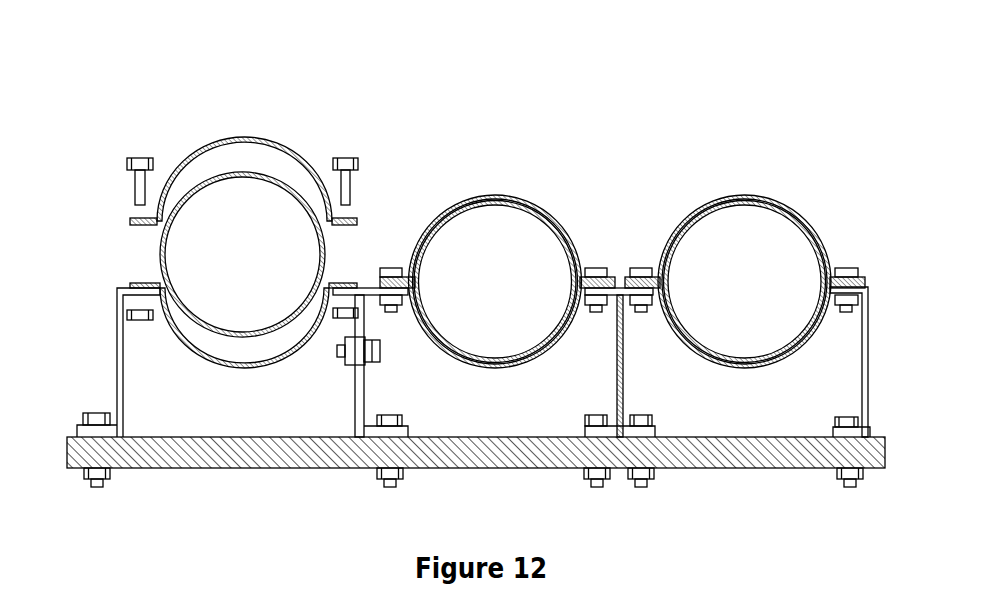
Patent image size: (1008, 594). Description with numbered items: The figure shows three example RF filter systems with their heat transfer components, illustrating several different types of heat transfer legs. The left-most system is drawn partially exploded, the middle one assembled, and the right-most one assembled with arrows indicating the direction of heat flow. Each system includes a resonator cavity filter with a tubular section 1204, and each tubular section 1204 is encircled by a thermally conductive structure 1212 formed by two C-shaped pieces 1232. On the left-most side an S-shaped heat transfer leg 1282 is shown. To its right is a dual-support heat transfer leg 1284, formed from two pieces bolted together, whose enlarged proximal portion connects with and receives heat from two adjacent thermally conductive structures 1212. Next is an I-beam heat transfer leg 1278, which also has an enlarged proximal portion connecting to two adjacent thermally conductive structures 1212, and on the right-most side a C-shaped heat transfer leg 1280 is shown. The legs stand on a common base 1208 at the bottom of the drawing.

The tubular section 1204 is at (493, 267).
The base plate 1208 is at (476, 476).
The thermally conductive structure 1212 is at (496, 226).
The C-shaped piece 1232 is at (496, 226).
The I-beam heat transfer leg 1278 is at (651, 362).
The C-shaped heat transfer leg 1280 is at (830, 362).
The S-shaped heat transfer leg 1282 is at (147, 362).
The dual-support heat transfer leg 1284 is at (405, 362).